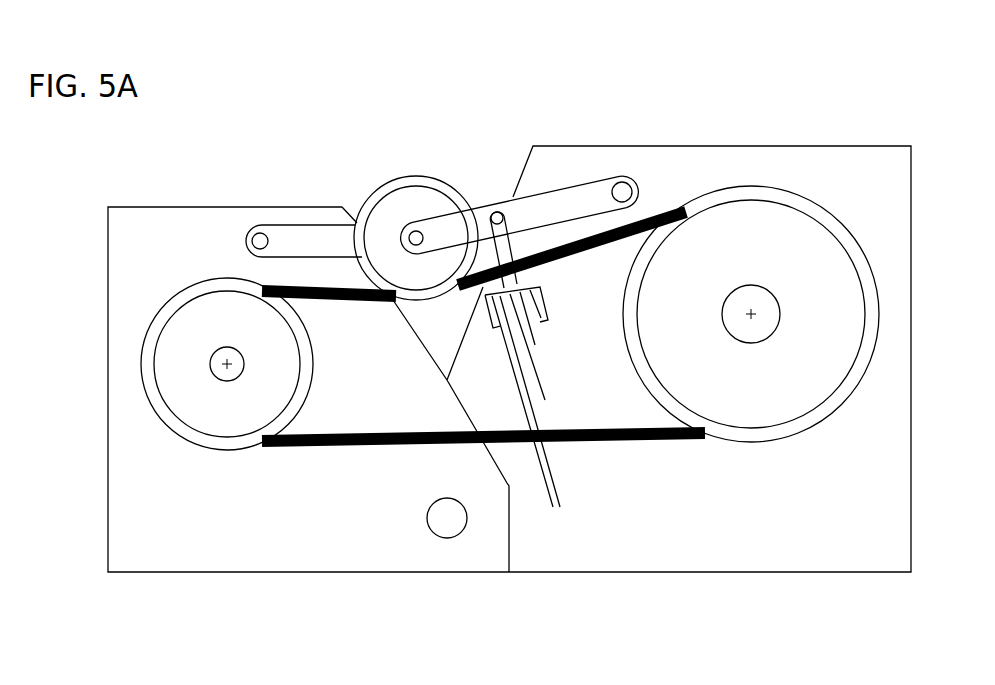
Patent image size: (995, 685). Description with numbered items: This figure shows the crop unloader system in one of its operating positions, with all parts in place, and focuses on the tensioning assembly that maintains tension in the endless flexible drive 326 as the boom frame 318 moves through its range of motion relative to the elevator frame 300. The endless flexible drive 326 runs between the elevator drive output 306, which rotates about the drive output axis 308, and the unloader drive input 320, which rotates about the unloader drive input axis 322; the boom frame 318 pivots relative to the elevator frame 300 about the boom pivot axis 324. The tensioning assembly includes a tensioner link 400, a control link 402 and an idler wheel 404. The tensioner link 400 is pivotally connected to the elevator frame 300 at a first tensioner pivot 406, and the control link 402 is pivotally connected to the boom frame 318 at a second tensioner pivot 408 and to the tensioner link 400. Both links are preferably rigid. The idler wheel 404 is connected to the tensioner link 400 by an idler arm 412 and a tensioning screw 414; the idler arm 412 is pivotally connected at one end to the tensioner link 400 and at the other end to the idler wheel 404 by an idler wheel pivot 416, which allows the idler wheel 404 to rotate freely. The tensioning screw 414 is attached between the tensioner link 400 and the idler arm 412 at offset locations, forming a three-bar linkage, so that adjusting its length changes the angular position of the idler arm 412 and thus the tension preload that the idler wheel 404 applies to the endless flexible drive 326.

The elevator frame 300 is at (598, 545).
The elevator drive output 306 is at (738, 403).
The drive output axis 308 is at (752, 318).
The boom frame 318 is at (293, 518).
The unloader drive input 320 is at (183, 370).
The unloader drive input axis 322 is at (227, 370).
The boom pivot axis 324 is at (447, 518).
The endless flexible drive 326 is at (390, 450).
The tensioner link 400 is at (555, 212).
The control link 402 is at (314, 245).
The idler wheel 404 is at (405, 196).
The first tensioner pivot 406 is at (621, 182).
The second tensioner pivot 408 is at (262, 233).
The idler arm 412 is at (497, 211).
The tensioning screw 414 is at (522, 280).
The idler wheel pivot 416 is at (412, 232).